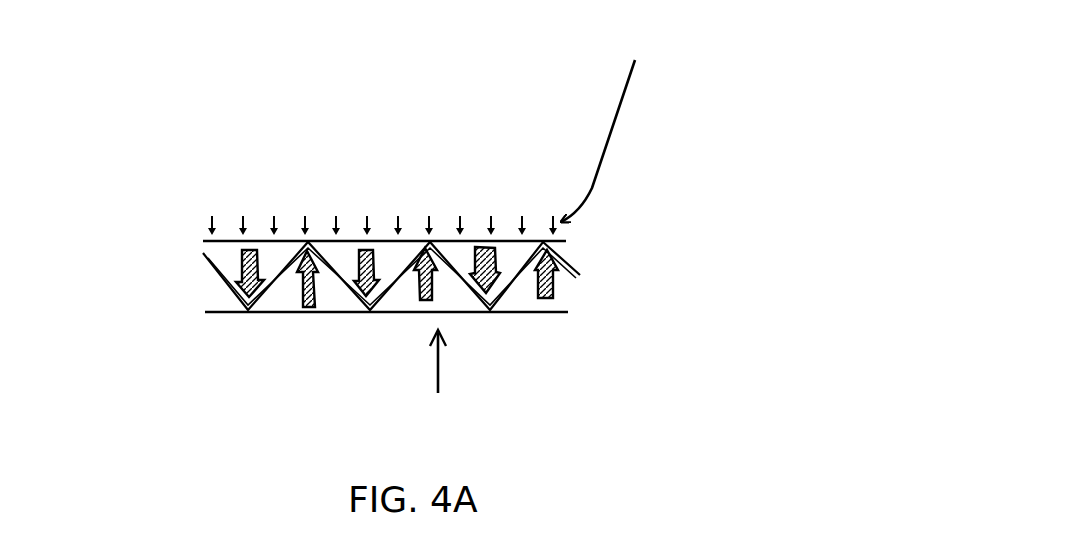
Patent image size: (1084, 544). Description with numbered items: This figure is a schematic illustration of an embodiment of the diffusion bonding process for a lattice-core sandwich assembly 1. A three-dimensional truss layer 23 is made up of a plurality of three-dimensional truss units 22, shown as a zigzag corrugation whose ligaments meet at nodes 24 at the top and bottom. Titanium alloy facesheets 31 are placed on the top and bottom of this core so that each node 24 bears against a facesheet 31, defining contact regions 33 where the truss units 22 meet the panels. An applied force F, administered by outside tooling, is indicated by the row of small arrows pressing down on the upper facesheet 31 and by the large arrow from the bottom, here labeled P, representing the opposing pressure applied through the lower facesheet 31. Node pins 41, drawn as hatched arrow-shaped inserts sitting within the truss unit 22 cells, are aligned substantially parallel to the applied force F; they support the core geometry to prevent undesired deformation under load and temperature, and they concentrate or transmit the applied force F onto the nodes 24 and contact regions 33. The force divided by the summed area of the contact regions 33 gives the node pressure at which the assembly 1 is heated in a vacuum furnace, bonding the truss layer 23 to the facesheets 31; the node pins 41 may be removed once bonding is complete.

The assembly 1 is at (759, 72).
The three-dimensional truss unit 22 is at (561, 259).
The three-dimensional truss layer 23 is at (186, 247).
The node 24 is at (308, 240).
The facesheet 31 is at (228, 237).
The contact region 33 is at (308, 240).
The node pin 41 is at (315, 283).
The applied force F is at (622, 118).
The pressure P is at (444, 380).